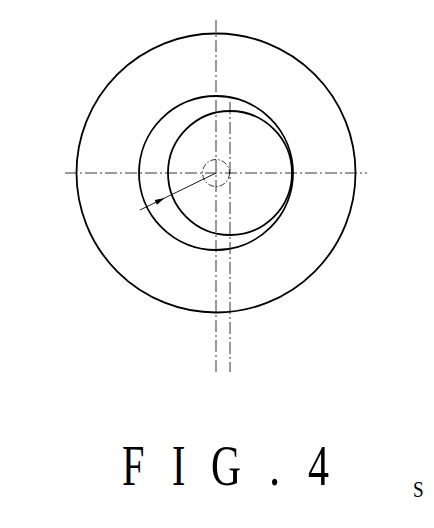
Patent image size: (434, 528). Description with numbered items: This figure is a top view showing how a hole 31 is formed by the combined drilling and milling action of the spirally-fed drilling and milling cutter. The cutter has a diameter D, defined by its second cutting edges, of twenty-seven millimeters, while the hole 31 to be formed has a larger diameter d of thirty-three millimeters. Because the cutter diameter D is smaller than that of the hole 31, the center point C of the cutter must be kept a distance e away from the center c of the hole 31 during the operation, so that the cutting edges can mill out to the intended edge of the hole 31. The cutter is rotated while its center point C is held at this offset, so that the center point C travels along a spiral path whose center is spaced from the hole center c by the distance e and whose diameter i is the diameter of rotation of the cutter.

The hole 31 is at (168, 213).
The diameter of the drilling and milling cutter D is at (216, 173).
The diameter of the hole d is at (301, 226).
The diameter of the spiral path i is at (197, 214).
The distance between cutter center and hole center e is at (185, 365).
The center of the hole c is at (216, 173).
The center point of the drilling and milling cutter C is at (216, 173).